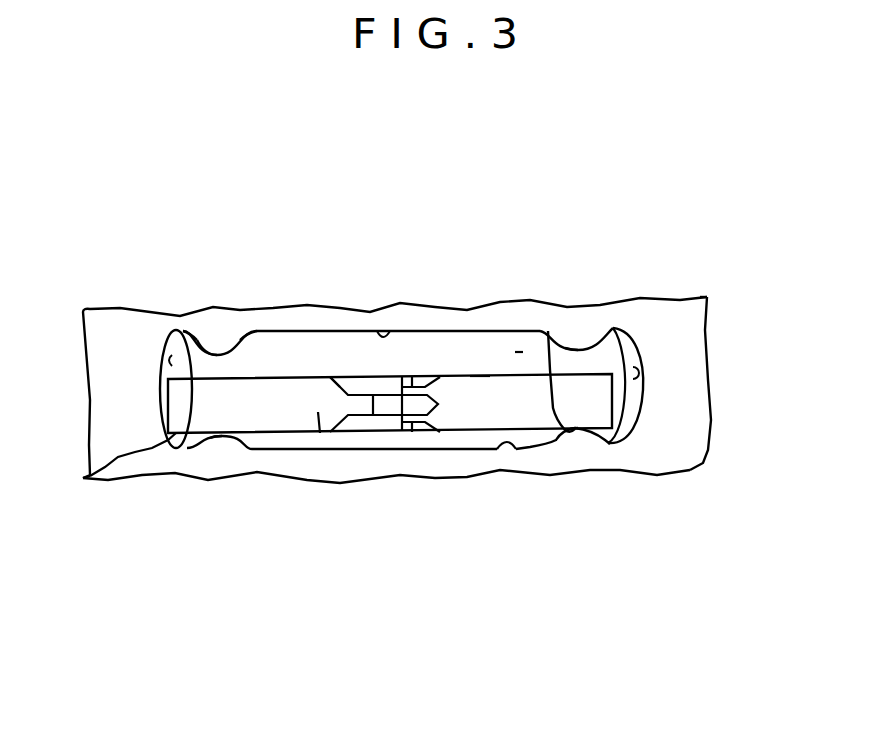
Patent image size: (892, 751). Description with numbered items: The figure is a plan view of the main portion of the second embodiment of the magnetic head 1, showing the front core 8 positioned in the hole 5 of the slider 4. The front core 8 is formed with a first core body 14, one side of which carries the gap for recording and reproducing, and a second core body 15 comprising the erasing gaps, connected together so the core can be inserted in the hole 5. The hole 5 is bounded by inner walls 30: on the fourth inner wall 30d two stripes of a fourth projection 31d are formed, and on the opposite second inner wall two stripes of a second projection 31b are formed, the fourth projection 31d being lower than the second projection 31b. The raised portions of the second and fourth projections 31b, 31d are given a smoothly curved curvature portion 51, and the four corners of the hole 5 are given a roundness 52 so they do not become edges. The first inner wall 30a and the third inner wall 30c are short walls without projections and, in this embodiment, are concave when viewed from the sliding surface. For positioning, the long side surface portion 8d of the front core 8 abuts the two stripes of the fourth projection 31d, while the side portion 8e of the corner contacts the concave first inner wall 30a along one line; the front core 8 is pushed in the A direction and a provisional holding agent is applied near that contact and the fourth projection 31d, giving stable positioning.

The magnetic head 1 is at (709, 270).
The slider 4 is at (677, 342).
The hole 5 is at (519, 352).
The front core 8 is at (469, 359).
The long side surface portion 8d is at (318, 412).
The side portion 8e is at (90, 476).
The first core body 14 is at (320, 360).
The second core body 15 is at (485, 359).
The inner wall 30 is at (393, 331).
The first inner wall 30a is at (185, 332).
The third inner wall 30c is at (640, 378).
The fourth inner wall 30d is at (500, 452).
The second projection 31b is at (215, 345).
The fourth projection 31d is at (222, 440).
The curvature portion 51 is at (255, 332).
The roundness 52 is at (178, 338).
The A direction A is at (707, 412).